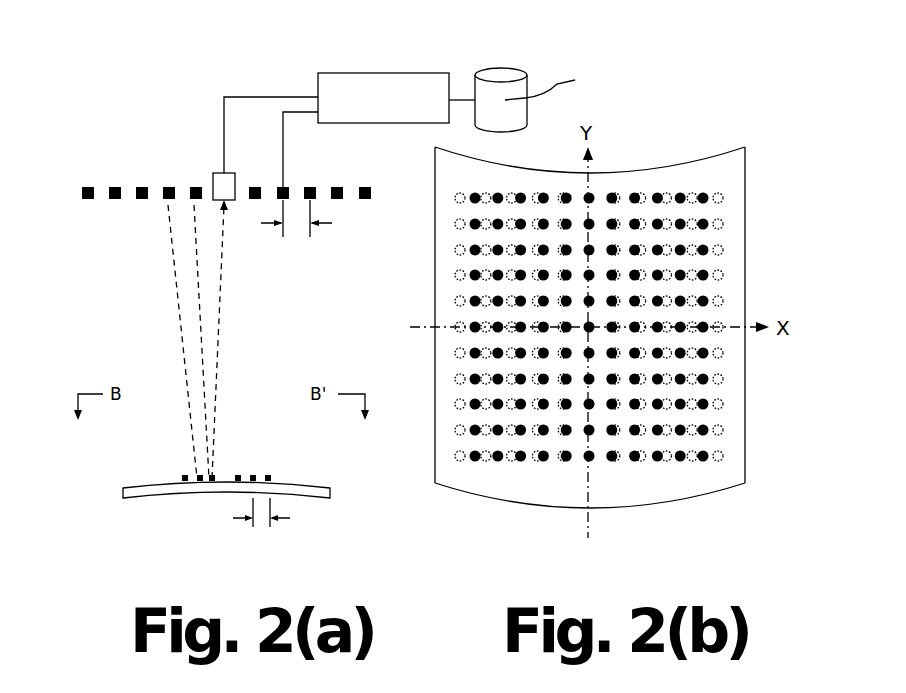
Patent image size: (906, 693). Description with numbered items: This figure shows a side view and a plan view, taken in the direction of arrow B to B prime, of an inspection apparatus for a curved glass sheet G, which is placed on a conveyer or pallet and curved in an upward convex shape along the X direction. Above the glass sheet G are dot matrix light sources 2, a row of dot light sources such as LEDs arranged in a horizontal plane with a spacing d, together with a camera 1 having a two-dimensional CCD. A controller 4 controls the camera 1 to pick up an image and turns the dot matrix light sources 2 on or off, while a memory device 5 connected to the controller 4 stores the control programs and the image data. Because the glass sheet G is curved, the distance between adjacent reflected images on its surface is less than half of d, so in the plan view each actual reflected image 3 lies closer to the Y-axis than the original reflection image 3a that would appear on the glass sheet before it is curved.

In FIG. 2A, the camera 1 is at (230, 173).
In FIG. 2A, the dot matrix light sources 2 is at (286, 187).
In FIG. 2A, the reflected image 3 is at (270, 476).
In FIG. 2B, the reflected image 3 is at (705, 221).
In FIG. 2B, the original reflection image 3a is at (722, 228).
In FIG. 2A, the controller 4 is at (388, 73).
In FIG. 2A, the memory device 5 is at (505, 63).
In FIG. 2A, the glass sheet G is at (312, 482).
In FIG. 2B, the glass sheet G is at (746, 162).